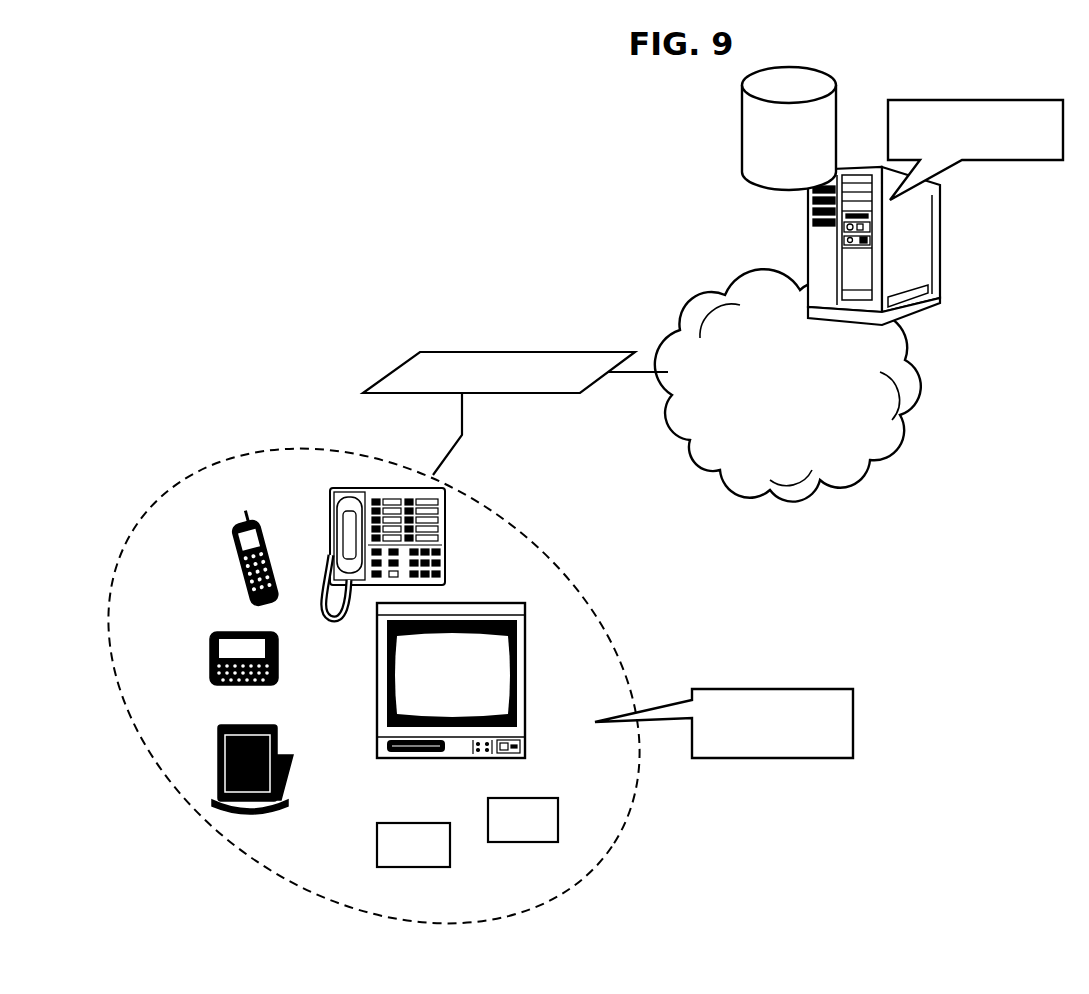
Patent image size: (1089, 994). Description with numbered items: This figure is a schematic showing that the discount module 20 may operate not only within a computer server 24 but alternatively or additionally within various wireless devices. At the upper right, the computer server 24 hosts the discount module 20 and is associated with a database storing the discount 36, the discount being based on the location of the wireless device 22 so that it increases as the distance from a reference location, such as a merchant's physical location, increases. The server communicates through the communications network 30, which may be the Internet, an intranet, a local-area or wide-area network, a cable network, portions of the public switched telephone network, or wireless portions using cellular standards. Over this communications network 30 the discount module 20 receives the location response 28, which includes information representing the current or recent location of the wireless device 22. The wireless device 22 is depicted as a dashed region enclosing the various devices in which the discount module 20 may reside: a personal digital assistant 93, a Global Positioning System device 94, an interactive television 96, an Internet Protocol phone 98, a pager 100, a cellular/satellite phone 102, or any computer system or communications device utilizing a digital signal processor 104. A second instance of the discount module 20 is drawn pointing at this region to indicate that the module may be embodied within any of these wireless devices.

The discount module 20 is at (1048, 160).
The wireless device 22 is at (245, 450).
The computer server 24 is at (945, 233).
The location response 28 is at (497, 352).
The communications network 30 is at (697, 305).
The discount 36 is at (742, 122).
The personal digital assistant 93 is at (219, 746).
The Global Positioning System device 94 is at (376, 836).
The interactive television 96 is at (430, 758).
The Internet Protocol phone 98 is at (330, 498).
The pager 100 is at (210, 653).
The cellular/satellite phone 102 is at (229, 558).
The digital signal processor 104 is at (560, 820).